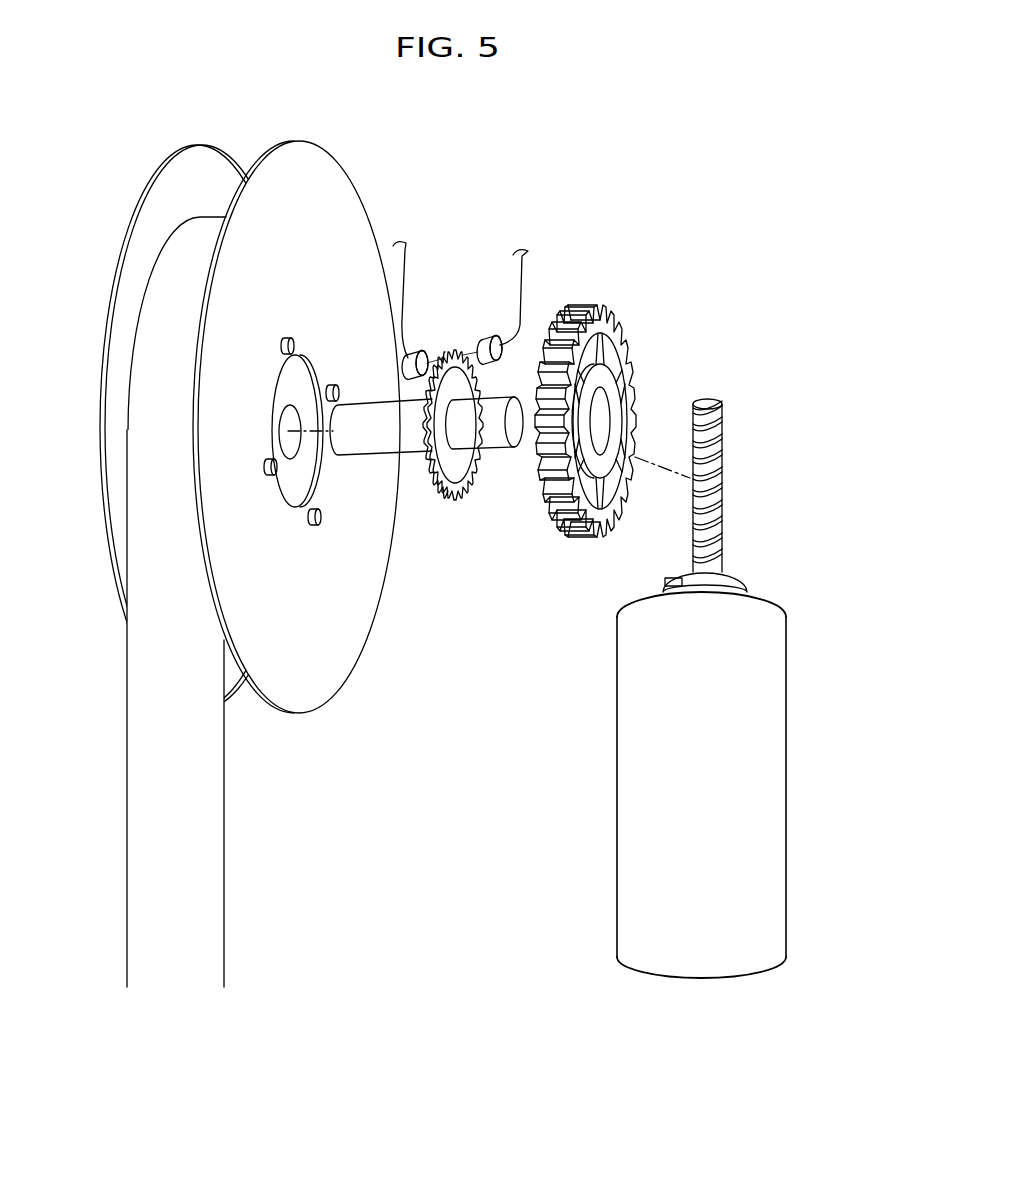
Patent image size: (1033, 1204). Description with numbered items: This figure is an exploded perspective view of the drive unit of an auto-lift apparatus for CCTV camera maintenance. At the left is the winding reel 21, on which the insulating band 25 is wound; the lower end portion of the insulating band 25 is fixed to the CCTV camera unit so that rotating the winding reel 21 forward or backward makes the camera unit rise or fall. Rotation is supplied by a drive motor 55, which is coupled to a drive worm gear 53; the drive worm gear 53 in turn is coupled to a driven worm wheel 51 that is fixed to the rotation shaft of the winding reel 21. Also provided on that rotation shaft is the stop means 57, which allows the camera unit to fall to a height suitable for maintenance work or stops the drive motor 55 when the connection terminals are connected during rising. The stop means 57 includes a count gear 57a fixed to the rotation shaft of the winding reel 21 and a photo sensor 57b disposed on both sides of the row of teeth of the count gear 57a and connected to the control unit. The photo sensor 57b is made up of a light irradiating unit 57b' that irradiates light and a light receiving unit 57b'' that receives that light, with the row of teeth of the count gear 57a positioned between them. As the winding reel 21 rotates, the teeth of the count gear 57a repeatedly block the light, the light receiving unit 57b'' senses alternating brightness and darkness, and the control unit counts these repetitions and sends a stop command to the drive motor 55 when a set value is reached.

The winding reel 21 is at (323, 198).
The insulating band 25 is at (194, 794).
The driven worm wheel 51 is at (603, 308).
The drive worm gear 53 is at (697, 400).
The drive motor 55 is at (647, 752).
The stop means 57 is at (533, 164).
The count gear 57a is at (458, 377).
The photo sensor 57b is at (459, 251).
The light irradiating unit 57b' is at (427, 297).
The light receiving unit 57b'' is at (498, 289).